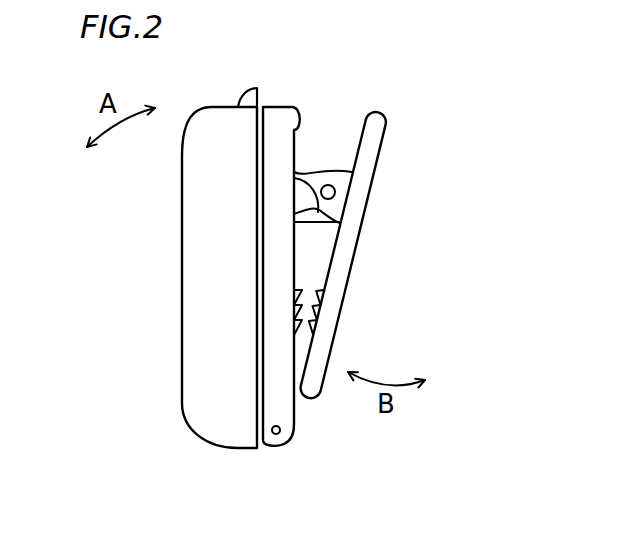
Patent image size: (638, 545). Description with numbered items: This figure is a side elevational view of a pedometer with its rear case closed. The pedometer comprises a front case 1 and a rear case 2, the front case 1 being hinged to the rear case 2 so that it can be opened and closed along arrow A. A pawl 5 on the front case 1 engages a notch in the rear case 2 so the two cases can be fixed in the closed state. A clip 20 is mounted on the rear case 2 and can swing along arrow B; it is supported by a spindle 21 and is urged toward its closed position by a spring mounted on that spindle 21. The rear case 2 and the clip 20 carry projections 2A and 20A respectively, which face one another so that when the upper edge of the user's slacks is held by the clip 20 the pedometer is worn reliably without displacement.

The front case 1 is at (213, 212).
The rear case 2 is at (284, 117).
The projection 2A is at (300, 296).
The pawl 5 is at (245, 102).
The clip 20 is at (347, 240).
The projection 20A is at (330, 295).
The spindle 21 is at (335, 191).